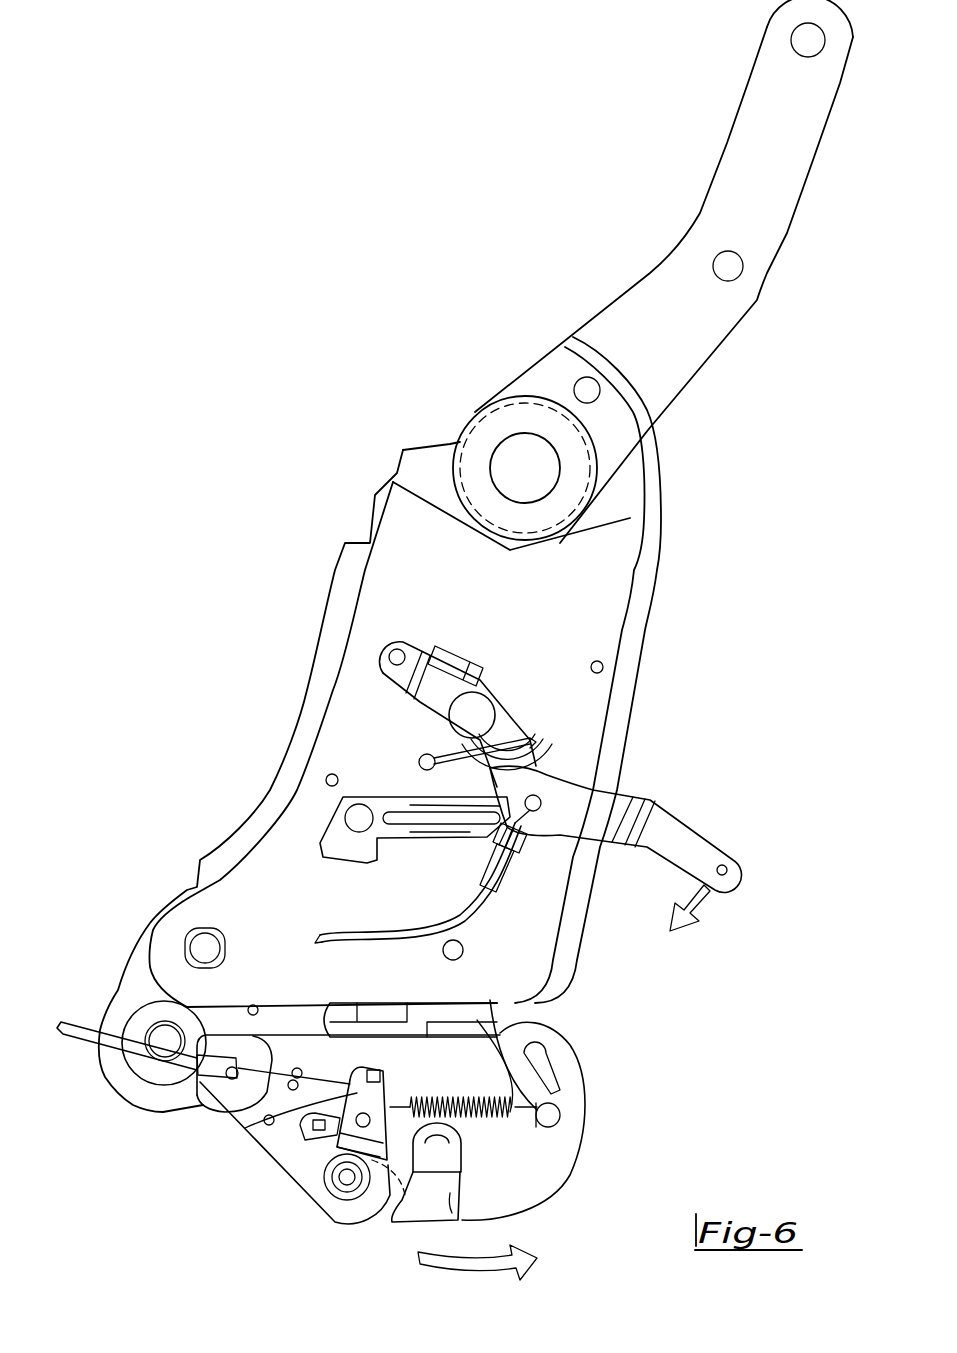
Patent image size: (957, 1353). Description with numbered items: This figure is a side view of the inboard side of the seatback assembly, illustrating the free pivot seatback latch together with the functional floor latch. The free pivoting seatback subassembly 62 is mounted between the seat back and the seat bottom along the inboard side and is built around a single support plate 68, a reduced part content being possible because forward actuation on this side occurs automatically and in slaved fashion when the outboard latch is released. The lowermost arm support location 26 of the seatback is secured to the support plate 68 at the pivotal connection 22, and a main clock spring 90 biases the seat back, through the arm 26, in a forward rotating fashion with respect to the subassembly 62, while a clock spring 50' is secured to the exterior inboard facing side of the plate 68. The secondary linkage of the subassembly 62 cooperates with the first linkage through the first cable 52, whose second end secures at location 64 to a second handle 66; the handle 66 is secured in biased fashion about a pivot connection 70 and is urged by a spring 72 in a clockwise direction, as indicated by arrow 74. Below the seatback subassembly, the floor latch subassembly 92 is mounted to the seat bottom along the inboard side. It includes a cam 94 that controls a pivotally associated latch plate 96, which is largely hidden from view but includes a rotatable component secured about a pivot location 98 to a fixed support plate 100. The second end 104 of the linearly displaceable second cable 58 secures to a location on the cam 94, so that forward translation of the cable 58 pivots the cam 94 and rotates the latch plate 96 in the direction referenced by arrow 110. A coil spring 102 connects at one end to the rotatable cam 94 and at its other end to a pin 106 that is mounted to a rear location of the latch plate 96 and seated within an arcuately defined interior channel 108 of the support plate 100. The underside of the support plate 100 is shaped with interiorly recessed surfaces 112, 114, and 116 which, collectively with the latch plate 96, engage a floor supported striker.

The pivotal connection 22 is at (525, 467).
The arm support location 26 is at (660, 283).
The clock spring 50' is at (511, 444).
The first cable 52 is at (378, 930).
The second cable 58 is at (82, 1040).
The free pivoting seatback subassembly 62 is at (686, 668).
The cable securing location 64 is at (536, 797).
The second handle 66 is at (683, 837).
The support plate 68 is at (388, 620).
The pivot connection 70 is at (472, 708).
The spring 72 is at (533, 738).
The arrow 74 is at (703, 912).
The main clock spring 90 is at (580, 440).
The floor latch subassembly 92 is at (236, 1161).
The cam 94 is at (243, 1128).
The latch plate 96 is at (430, 1207).
The pivot location 98 is at (483, 1095).
The fixed support plate 100 is at (550, 1193).
The coil spring 102 is at (492, 1113).
The second end of second cable 104 is at (390, 1092).
The pin 106 is at (552, 1117).
The interior channel 108 is at (493, 1023).
The arrow 110 is at (470, 1277).
The interiorly recessed surface 112 is at (410, 1180).
The interiorly recessed surface 114 is at (437, 1157).
The interiorly recessed surface 116 is at (452, 1213).